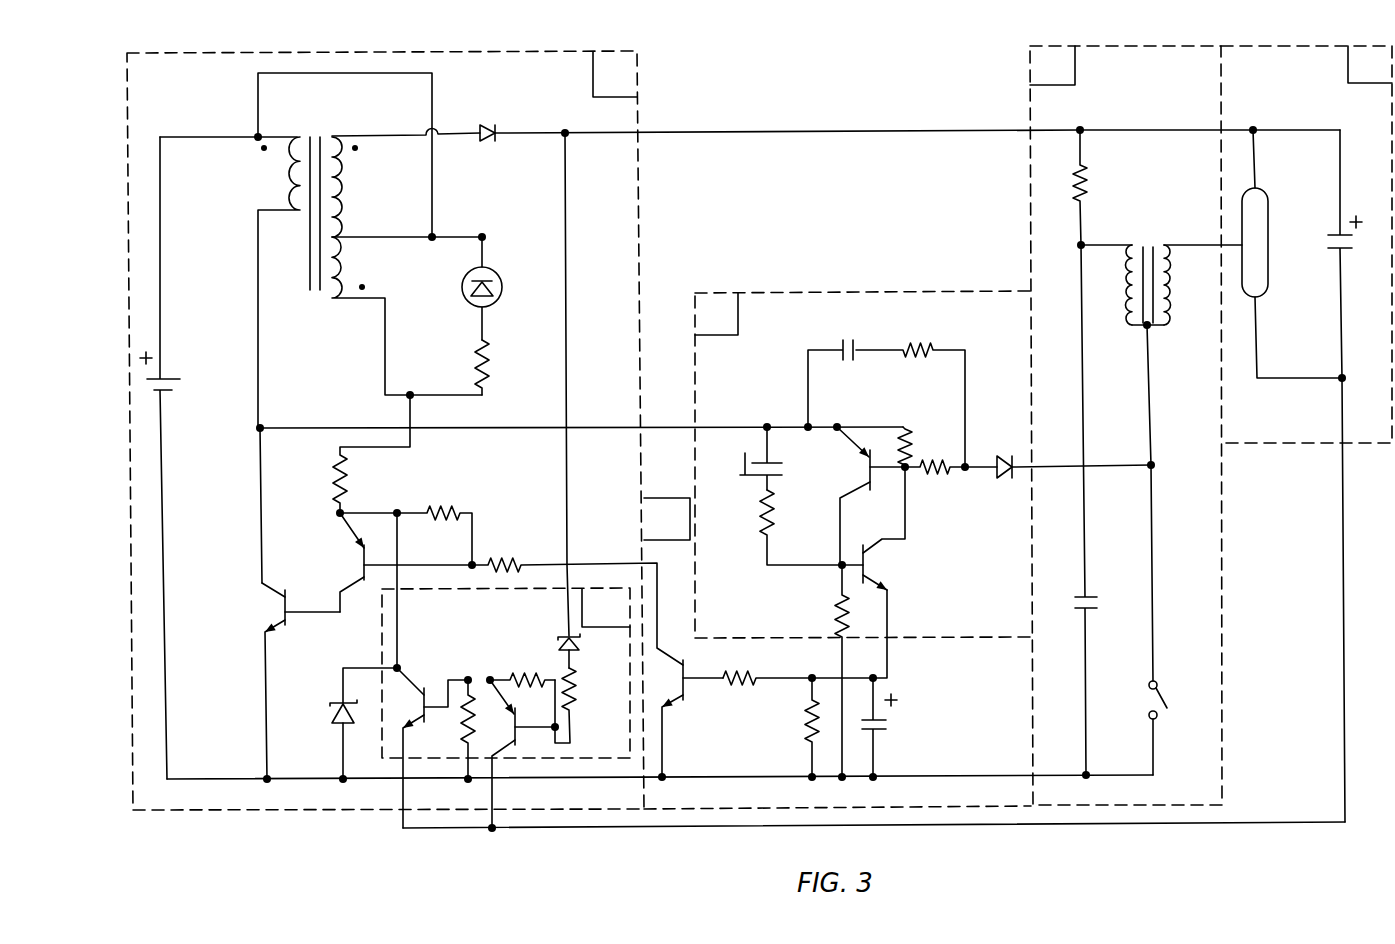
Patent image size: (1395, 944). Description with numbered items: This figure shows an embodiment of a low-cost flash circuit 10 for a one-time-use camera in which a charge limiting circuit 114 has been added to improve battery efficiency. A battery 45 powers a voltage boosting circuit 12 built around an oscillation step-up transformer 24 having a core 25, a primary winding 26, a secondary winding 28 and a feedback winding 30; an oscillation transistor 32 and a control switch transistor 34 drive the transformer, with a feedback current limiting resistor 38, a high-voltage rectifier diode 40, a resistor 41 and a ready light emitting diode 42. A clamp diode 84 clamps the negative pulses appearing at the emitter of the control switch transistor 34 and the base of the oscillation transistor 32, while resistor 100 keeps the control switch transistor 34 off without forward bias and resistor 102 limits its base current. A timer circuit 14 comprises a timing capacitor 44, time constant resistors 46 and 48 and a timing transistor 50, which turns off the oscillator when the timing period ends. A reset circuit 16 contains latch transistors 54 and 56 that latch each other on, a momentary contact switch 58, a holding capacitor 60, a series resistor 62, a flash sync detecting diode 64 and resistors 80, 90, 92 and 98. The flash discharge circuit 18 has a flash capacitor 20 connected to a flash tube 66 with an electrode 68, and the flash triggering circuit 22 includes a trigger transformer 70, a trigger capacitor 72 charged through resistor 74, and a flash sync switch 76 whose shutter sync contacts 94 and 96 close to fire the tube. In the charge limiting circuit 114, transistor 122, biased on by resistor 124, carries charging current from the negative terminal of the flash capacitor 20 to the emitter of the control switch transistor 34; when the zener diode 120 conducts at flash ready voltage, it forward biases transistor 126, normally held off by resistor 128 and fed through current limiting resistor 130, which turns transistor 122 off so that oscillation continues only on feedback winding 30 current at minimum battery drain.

The flash circuit 10 is at (759, 465).
The voltage boosting circuit 12 is at (385, 430).
The timer circuit 14 is at (837, 653).
The reset circuit 16 is at (862, 464).
The flash discharge circuit 18 is at (1306, 244).
The flash capacitor 20 is at (1333, 233).
The flash triggering circuit 22 is at (1126, 425).
The oscillation step-up transformer 24 is at (336, 124).
The core 25 is at (318, 300).
The primary winding 26 is at (280, 176).
The secondary winding 28 is at (345, 182).
The feedback winding 30 is at (346, 256).
The oscillation transistor 32 is at (270, 602).
The control switch transistor 34 is at (346, 560).
The feedback current limiting resistor 38 is at (333, 476).
The high-voltage rectifier diode 40 is at (487, 145).
The resistor 41 is at (490, 348).
The light emitting diode 42 is at (490, 275).
The timing capacitor 44 is at (887, 728).
The battery 45 is at (170, 376).
The time constant resistor 46 is at (750, 684).
The time constant resistor 48 is at (808, 720).
The timing transistor 50 is at (664, 672).
The latch transistor 54 is at (866, 466).
The latch transistor 56 is at (888, 563).
The momentary contact switch 58 is at (745, 462).
The holding capacitor 60 is at (848, 342).
The series resistor 62 is at (921, 346).
The flash sync detecting diode 64 is at (1003, 458).
The flash tube 66 is at (1268, 288).
The electrode 68 is at (1240, 240).
The flash trigger transformer 70 is at (1172, 236).
The trigger capacitor 72 is at (1088, 597).
The trigger capacitor charging resistor 74 is at (1077, 185).
The flash sync switch 76 is at (1182, 707).
The resistor 80 is at (767, 537).
The clamp diode 84 is at (333, 706).
The resistor 90 is at (915, 450).
The resistor 92 is at (843, 612).
The shutter sync contact 94 is at (1157, 683).
The shutter sync contact 96 is at (1157, 717).
The resistor 98 is at (937, 475).
The resistor 100 is at (438, 510).
The resistor 102 is at (500, 562).
The charge limiting circuit 114 is at (508, 673).
The zener diode 120 is at (569, 638).
The transistor 122 is at (402, 697).
The resistor 124 is at (466, 718).
The transistor 126 is at (500, 715).
The resistor 128 is at (520, 680).
The resistor 130 is at (595, 690).